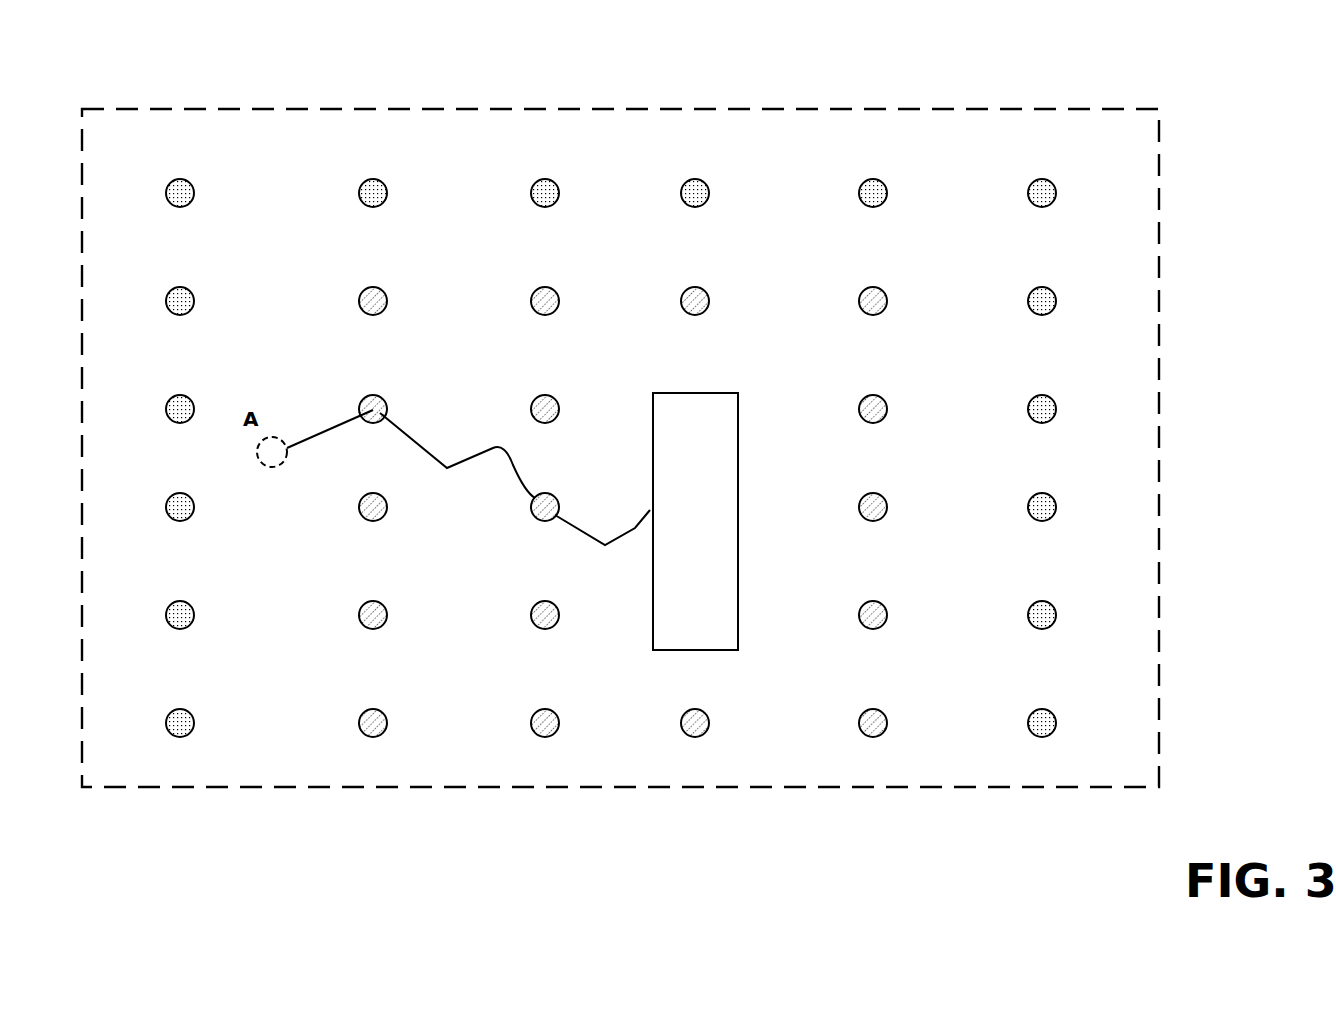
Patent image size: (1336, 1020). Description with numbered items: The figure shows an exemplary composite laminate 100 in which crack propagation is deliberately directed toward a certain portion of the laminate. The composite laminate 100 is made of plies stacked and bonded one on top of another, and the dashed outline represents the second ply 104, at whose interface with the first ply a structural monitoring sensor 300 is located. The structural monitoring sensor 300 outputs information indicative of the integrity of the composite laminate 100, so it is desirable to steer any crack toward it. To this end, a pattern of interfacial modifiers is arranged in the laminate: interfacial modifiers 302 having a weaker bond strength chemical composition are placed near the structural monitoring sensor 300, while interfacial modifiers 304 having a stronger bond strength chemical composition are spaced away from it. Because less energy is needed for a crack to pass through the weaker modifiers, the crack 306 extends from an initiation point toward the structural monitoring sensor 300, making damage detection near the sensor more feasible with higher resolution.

The composite laminate 100 is at (1236, 132).
The second ply 104 is at (972, 108).
The structural monitoring sensor 300 is at (739, 478).
The interfacial modifiers 302 is at (360, 403).
The interfacial modifiers 304 is at (194, 301).
The crack 306 is at (448, 484).